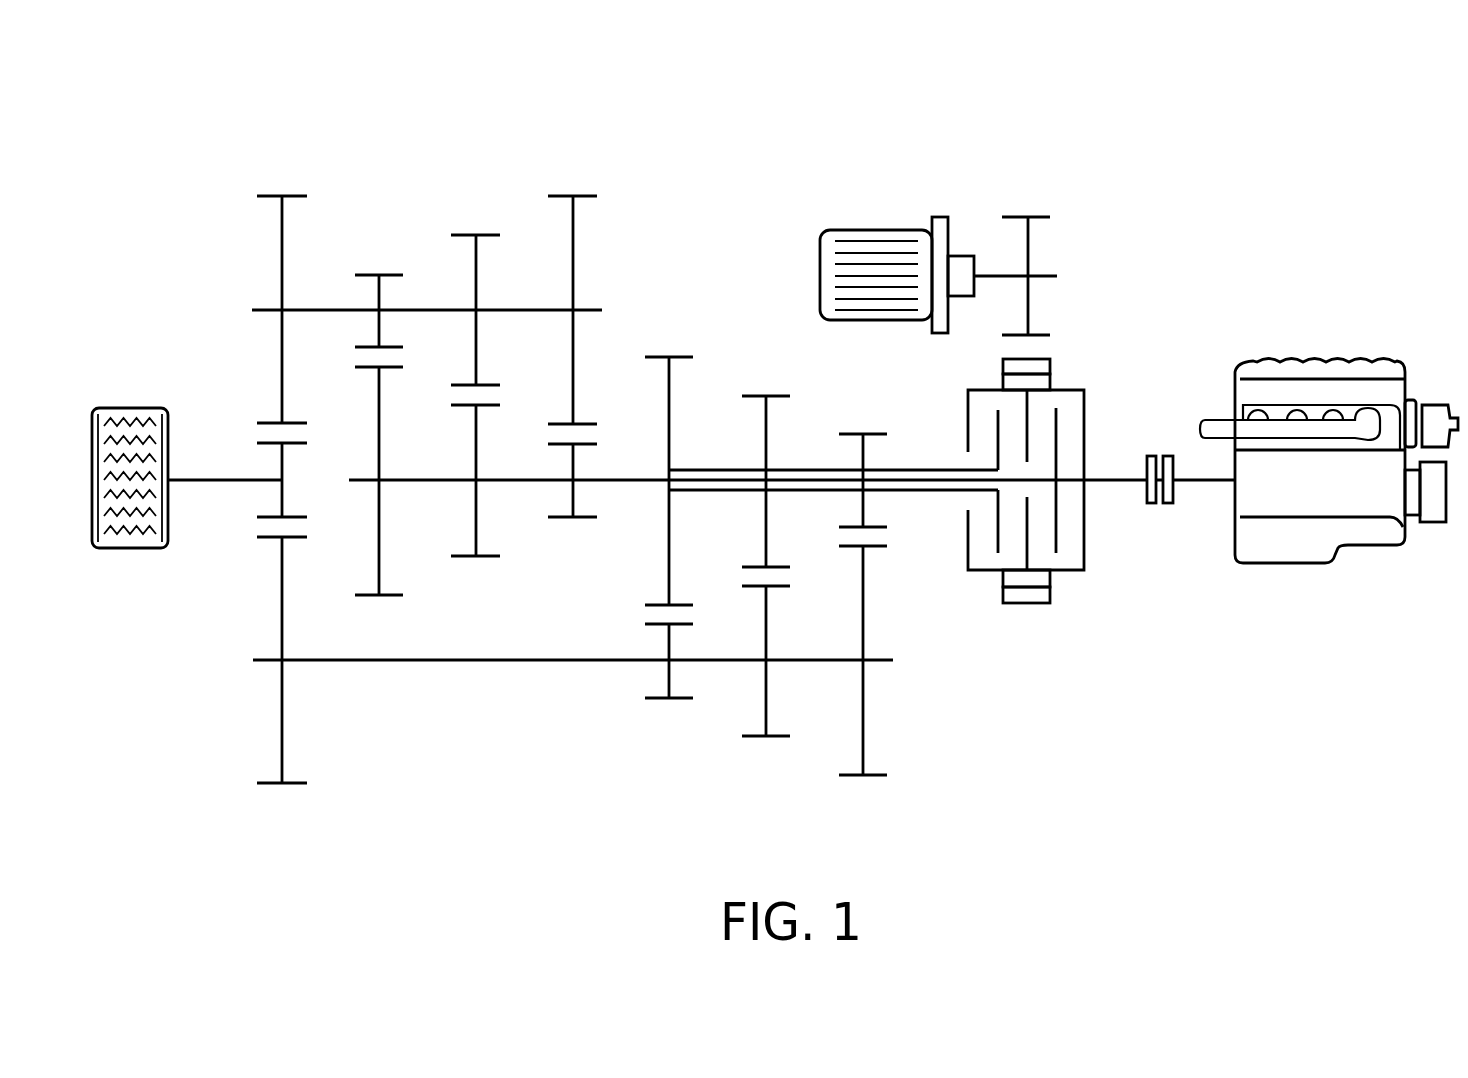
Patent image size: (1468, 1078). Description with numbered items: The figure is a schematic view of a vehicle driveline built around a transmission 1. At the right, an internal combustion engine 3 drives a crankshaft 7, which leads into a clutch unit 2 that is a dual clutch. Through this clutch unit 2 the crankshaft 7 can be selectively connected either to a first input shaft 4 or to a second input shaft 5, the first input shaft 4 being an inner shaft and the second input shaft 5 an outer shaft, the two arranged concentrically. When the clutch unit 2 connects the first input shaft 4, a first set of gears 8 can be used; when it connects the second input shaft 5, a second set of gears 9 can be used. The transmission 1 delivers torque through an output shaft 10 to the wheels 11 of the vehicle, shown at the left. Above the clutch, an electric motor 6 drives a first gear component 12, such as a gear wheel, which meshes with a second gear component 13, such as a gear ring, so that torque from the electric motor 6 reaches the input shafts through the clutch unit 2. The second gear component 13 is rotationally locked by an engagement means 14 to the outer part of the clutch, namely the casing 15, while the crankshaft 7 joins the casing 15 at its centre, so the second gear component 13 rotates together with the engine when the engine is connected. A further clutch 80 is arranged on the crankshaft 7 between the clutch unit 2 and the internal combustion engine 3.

The transmission 1 is at (656, 106).
The clutch unit 2 is at (1117, 378).
The internal combustion engine 3 is at (1323, 358).
The first input shaft 4 is at (937, 483).
The second input shaft 5 is at (912, 492).
The electric motor 6 is at (886, 230).
The crankshaft 7 is at (1198, 483).
The first set of gears 8 is at (421, 177).
The second set of gears 9 is at (705, 768).
The output shaft 10 is at (197, 480).
The wheels 11 is at (130, 408).
The first gear component 12 is at (1030, 245).
The second gear component 13 is at (1052, 362).
The engagement means 14 is at (1052, 380).
The casing 15 is at (1062, 572).
The further clutch 80 is at (1173, 503).